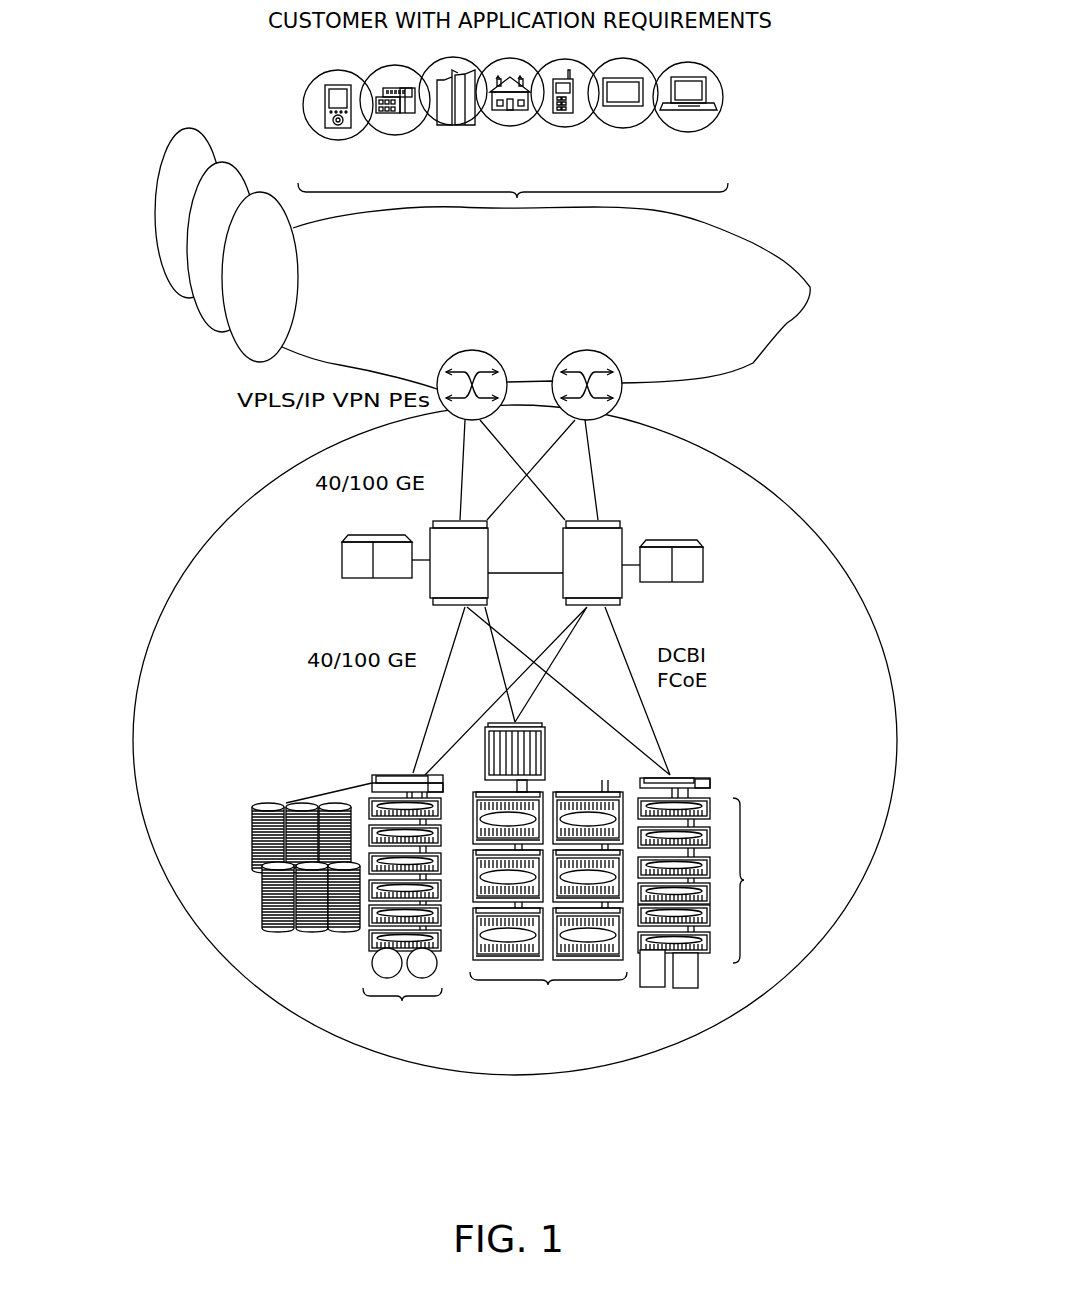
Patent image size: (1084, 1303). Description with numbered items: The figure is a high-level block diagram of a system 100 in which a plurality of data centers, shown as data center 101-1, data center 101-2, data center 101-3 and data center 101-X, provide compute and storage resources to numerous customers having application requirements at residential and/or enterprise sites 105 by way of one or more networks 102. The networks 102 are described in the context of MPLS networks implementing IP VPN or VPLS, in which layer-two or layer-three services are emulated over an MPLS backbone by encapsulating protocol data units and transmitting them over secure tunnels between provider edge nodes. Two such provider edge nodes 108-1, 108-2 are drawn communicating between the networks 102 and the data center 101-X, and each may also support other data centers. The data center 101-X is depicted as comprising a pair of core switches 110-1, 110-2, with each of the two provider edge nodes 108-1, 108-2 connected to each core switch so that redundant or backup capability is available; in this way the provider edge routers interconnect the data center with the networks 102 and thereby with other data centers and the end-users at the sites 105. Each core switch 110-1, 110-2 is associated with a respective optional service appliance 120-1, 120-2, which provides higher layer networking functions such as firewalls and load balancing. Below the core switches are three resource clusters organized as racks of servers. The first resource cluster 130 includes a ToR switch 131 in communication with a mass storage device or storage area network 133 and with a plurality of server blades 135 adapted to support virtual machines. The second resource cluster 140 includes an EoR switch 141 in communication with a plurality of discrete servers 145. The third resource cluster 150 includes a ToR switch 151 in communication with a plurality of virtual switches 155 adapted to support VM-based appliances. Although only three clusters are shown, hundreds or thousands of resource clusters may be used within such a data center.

The system 100 is at (840, 422).
The data center 101-1 is at (162, 165).
The data center 101-2 is at (197, 310).
The data center 101-3 is at (242, 353).
The data center 101-X is at (228, 520).
The networks 102 is at (757, 243).
The residential and/or enterprise sites 105 is at (738, 112).
The provider edge node 108-1 is at (457, 423).
The provider edge node 108-2 is at (622, 407).
The core switch 110-1 is at (562, 563).
The core switch 110-2 is at (622, 598).
The service appliance 120-1 is at (393, 535).
The service appliance 120-2 is at (660, 540).
The first resource cluster 130 is at (292, 958).
The ToR switch 131 is at (370, 783).
The mass storage device or storage area network 133 is at (255, 835).
The server blades 135 is at (402, 912).
The second resource cluster 140 is at (597, 1005).
The EoR switch 141 is at (543, 763).
The discrete servers 145 is at (548, 896).
The third resource cluster 150 is at (713, 733).
The ToR switch 151 is at (713, 783).
The virtual switches 155 is at (713, 893).